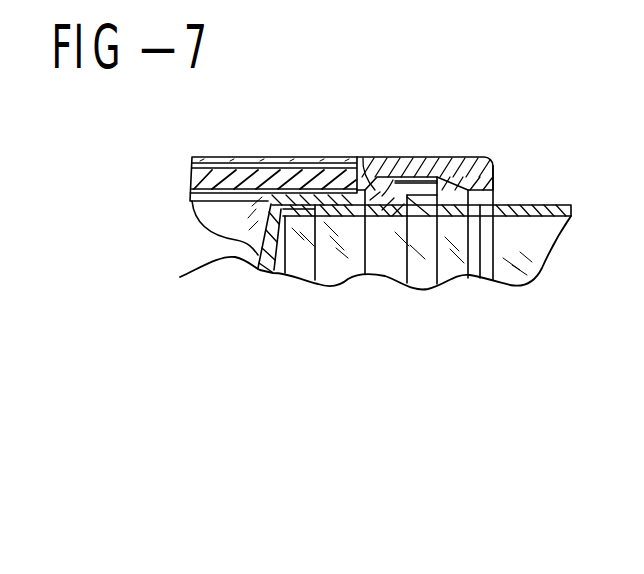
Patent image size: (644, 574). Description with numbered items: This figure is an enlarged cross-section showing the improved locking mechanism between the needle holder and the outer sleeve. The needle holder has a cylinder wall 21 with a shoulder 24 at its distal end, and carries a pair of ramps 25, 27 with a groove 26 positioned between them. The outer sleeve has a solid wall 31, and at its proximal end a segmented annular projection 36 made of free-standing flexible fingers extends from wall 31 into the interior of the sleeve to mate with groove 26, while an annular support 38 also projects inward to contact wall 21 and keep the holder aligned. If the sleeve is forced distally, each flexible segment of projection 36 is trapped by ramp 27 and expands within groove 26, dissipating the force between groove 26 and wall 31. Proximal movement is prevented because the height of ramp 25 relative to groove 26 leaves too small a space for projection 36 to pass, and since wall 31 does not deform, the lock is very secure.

The cylinder wall 21 is at (558, 205).
The shoulder 24 is at (260, 260).
The ramp 25 is at (348, 218).
The groove 26 is at (372, 158).
The ramp 27 is at (426, 198).
The wall 31 is at (200, 177).
The segmented annular projection 36 is at (393, 180).
The annular support 38 is at (489, 162).